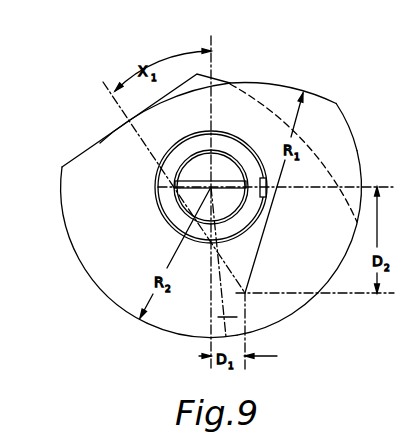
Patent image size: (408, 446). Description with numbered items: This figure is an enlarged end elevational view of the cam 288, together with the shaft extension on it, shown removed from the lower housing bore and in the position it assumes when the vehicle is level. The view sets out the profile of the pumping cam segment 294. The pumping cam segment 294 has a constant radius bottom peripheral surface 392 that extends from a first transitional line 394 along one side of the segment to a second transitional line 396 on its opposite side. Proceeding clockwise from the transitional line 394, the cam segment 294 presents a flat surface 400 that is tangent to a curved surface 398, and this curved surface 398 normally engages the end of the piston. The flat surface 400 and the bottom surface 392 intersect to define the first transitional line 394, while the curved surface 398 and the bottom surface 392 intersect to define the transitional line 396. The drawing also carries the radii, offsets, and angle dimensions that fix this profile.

The cam 288 is at (100, 290).
The pumping cam segment 294 is at (167, 312).
The constant radius bottom peripheral surface 392 is at (287, 318).
The second transitional line 396 is at (337, 103).
The curved surface 398 is at (257, 82).
The first transitional line 394 is at (63, 167).
The flat surface 400 is at (102, 133).